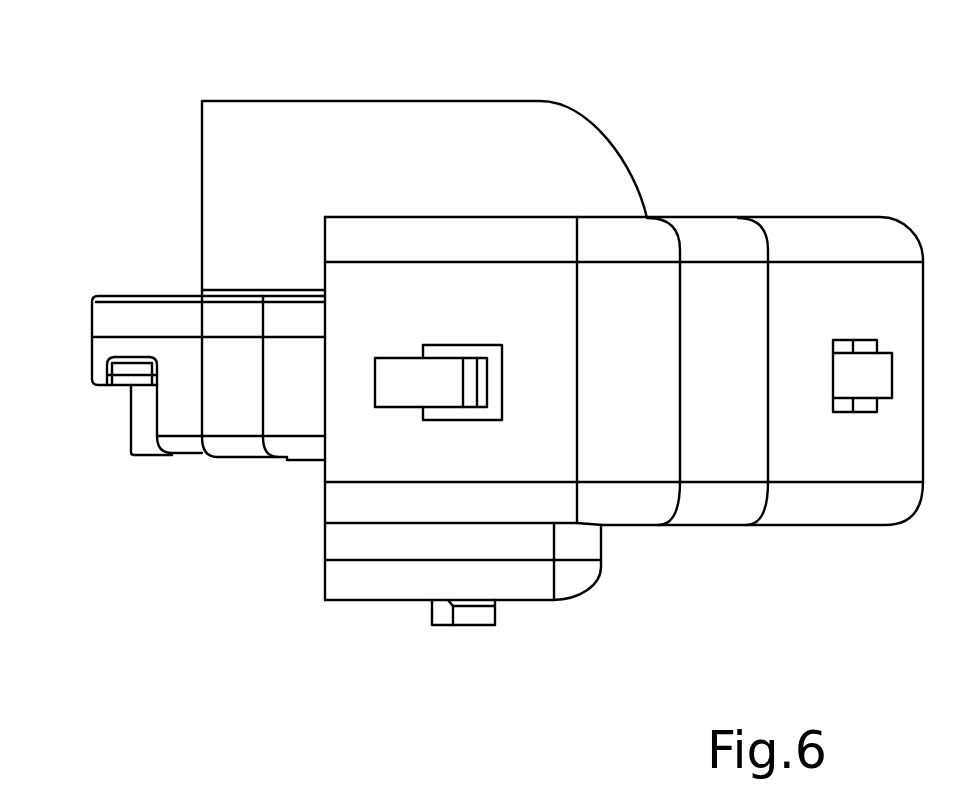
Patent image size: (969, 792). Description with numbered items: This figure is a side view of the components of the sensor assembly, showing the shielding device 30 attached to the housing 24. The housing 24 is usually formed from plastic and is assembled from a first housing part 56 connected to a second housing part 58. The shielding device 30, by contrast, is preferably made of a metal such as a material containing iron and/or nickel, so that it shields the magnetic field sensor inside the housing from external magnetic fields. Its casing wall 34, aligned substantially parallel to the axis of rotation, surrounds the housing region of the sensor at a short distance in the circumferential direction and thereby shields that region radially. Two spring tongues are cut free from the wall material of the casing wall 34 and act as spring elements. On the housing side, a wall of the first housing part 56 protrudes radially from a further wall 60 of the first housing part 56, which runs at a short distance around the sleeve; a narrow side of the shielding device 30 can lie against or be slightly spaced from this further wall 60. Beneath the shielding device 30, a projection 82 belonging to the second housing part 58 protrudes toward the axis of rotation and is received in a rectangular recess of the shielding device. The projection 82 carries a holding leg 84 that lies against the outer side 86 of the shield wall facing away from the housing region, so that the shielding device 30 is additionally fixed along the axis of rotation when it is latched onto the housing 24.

The housing 24 is at (164, 350).
The shielding device 30 is at (829, 184).
The casing wall 34 is at (627, 442).
The first housing part 56 is at (118, 306).
The second housing part 58 is at (172, 418).
The further wall 60 is at (218, 145).
The projection 82 is at (442, 615).
The holding leg 84 is at (472, 615).
The outer side 86 is at (340, 603).